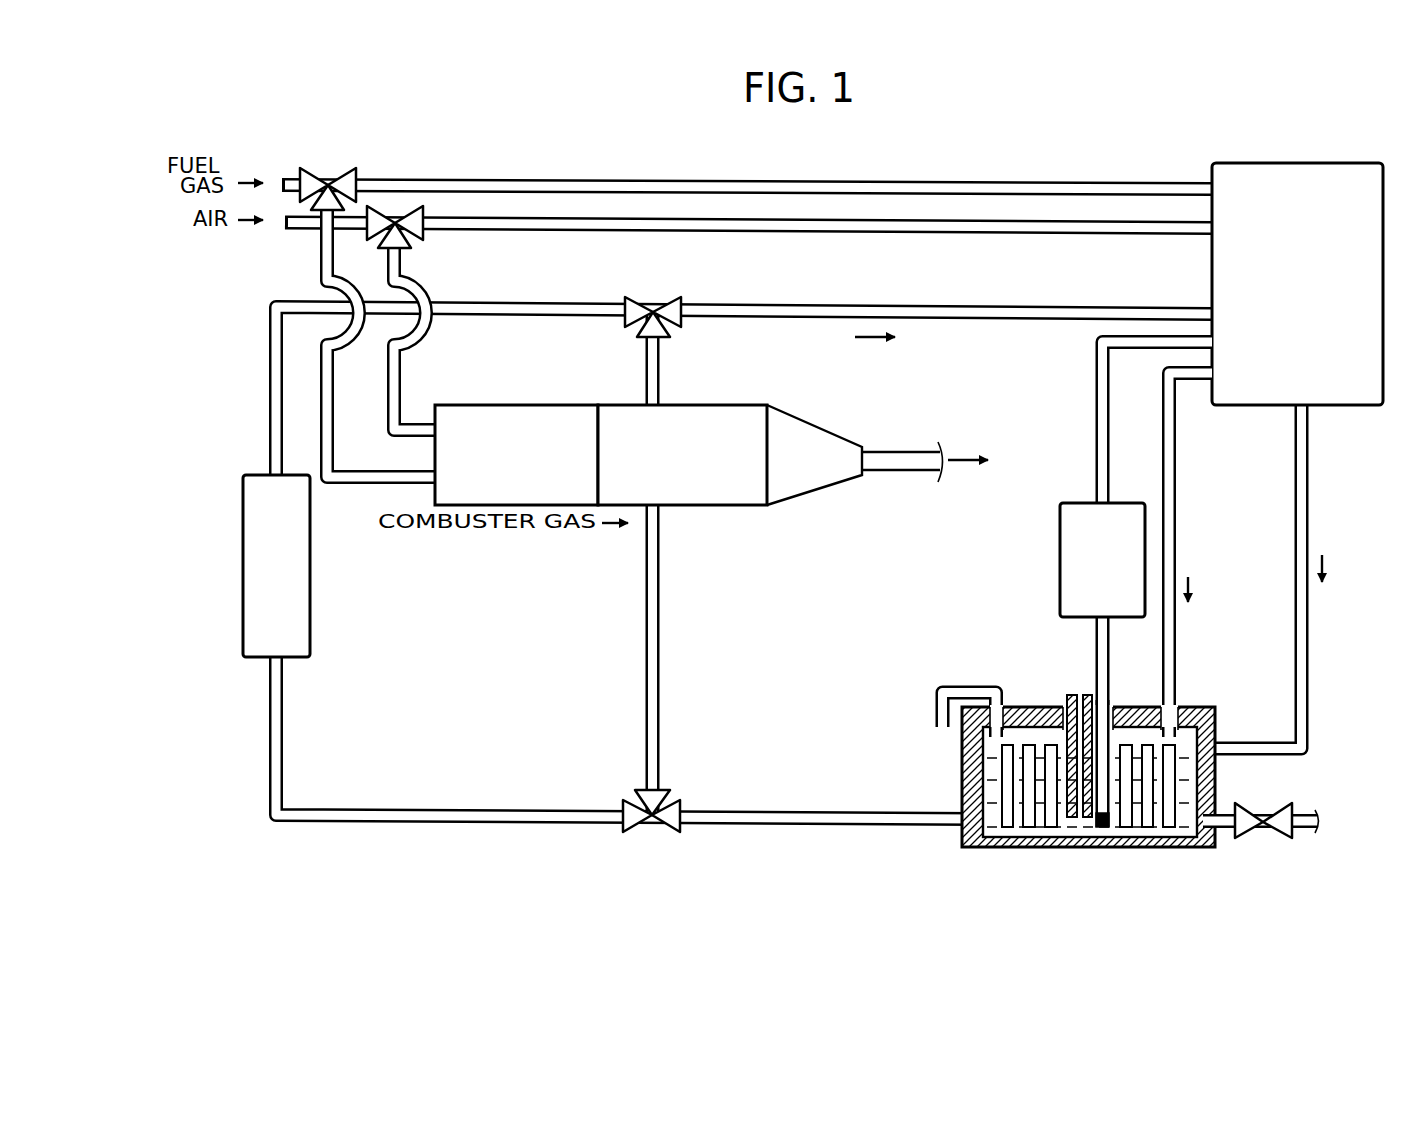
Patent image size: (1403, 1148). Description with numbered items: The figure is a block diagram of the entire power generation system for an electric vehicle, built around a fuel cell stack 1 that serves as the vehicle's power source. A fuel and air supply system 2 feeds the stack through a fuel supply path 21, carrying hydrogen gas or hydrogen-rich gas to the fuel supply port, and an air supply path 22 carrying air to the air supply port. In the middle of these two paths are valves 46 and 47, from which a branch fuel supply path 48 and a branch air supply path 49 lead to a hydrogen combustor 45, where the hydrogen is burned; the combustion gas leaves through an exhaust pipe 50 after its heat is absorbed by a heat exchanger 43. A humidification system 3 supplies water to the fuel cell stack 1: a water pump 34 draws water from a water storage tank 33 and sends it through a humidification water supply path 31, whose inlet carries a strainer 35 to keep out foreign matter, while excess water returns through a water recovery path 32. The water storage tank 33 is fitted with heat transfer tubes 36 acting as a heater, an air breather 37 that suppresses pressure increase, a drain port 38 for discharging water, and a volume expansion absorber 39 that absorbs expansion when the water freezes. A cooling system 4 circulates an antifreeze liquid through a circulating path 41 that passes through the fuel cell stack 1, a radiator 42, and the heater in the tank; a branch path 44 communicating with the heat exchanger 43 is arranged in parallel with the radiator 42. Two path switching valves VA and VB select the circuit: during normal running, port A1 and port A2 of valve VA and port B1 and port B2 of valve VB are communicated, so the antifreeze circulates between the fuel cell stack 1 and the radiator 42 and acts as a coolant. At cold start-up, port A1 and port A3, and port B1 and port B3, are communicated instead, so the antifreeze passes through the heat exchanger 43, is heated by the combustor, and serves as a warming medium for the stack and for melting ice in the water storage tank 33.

The fuel cell stack 1 is at (1283, 162).
The fuel and air supply system 2 is at (747, 214).
The humidification system 3 is at (1124, 619).
The cooling system 4 is at (839, 572).
The fuel supply path 21 is at (460, 176).
The air supply path 22 is at (805, 233).
The humidification water supply path 31 is at (1095, 390).
The water recovery path 32 is at (1178, 653).
The water storage tank 33 is at (1104, 760).
The water pump 34 is at (1060, 557).
The strainer 35 is at (1107, 827).
The heat transfer tubes 36 is at (983, 770).
The air breather 37 is at (962, 688).
The drain port 38 is at (1312, 833).
The volume expansion absorber 39 is at (1067, 697).
The circulating path 41 is at (880, 300).
The radiator 42 is at (310, 620).
The heat exchanger 43 is at (692, 507).
The branch path 44 is at (665, 638).
The hydrogen combustor 45 is at (557, 405).
The valve 46 is at (336, 168).
The valve 47 is at (412, 232).
The branch fuel supply path 48 is at (343, 484).
The branch air supply path 49 is at (402, 380).
The exhaust pipe 50 is at (908, 474).
The path switching valve VA is at (657, 825).
The path switching valve VB is at (655, 319).
The port A1 is at (655, 834).
The port A2 is at (630, 830).
The port A3 is at (648, 788).
The port B1 is at (678, 300).
The port B2 is at (623, 300).
The port B3 is at (657, 323).